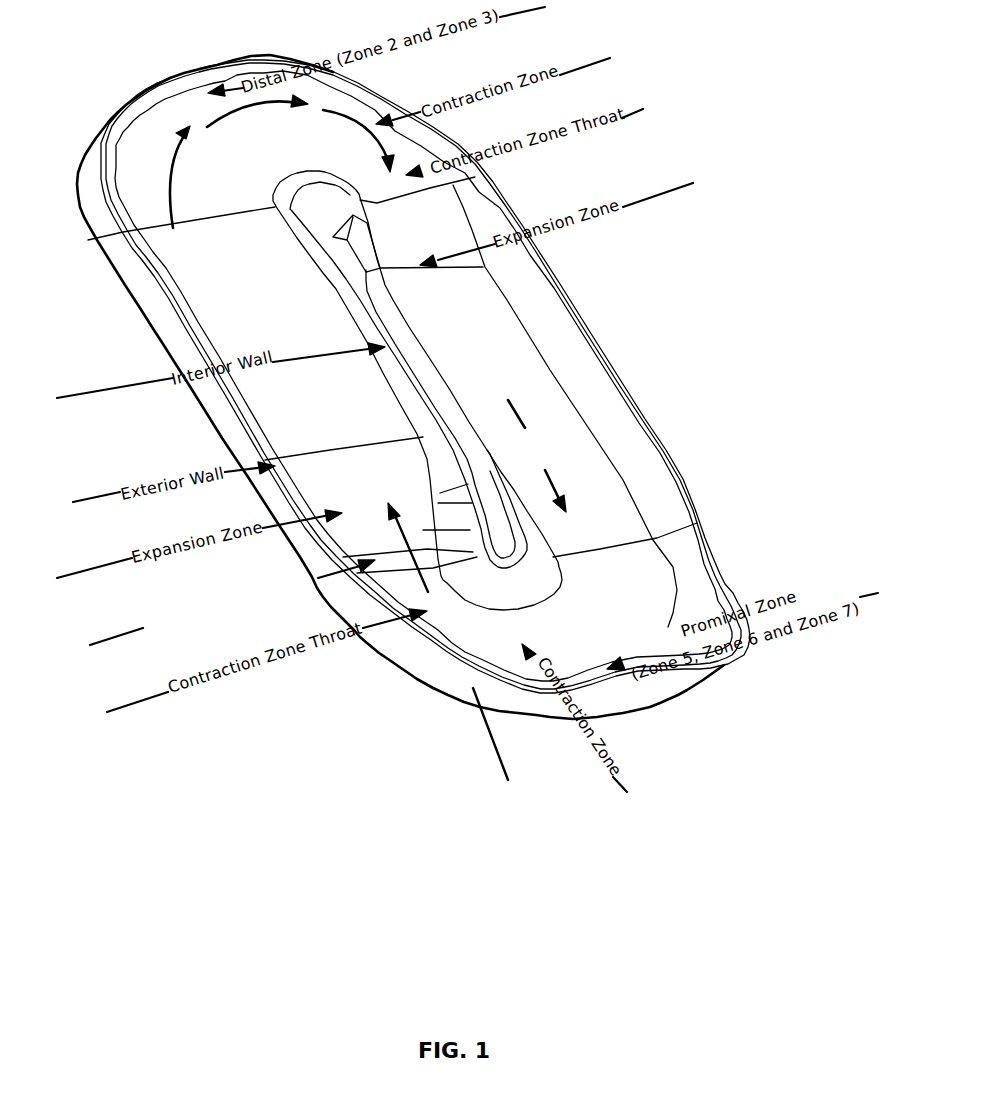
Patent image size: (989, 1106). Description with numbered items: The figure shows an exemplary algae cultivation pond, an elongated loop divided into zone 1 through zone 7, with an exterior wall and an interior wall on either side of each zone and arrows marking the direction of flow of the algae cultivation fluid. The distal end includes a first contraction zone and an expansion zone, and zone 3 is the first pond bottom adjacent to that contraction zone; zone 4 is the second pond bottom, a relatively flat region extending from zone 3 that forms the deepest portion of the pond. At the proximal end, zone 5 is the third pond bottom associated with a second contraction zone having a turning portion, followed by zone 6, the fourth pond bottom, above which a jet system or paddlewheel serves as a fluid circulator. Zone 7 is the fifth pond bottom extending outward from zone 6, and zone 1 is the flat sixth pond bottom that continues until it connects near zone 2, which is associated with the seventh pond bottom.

The zone 1 (sixth pond bottom) 1 is at (197, 269).
The zone 2 (seventh pond bottom) 2 is at (282, 161).
The zone 3 (first pond bottom) 3 is at (421, 222).
The zone 4 (second pond bottom) 4 is at (519, 435).
The zone 5 (third pond bottom) 5 is at (625, 579).
The zone 6 (fourth pond bottom) 6 is at (283, 598).
The zone 7 (fifth pond bottom) 7 is at (386, 608).